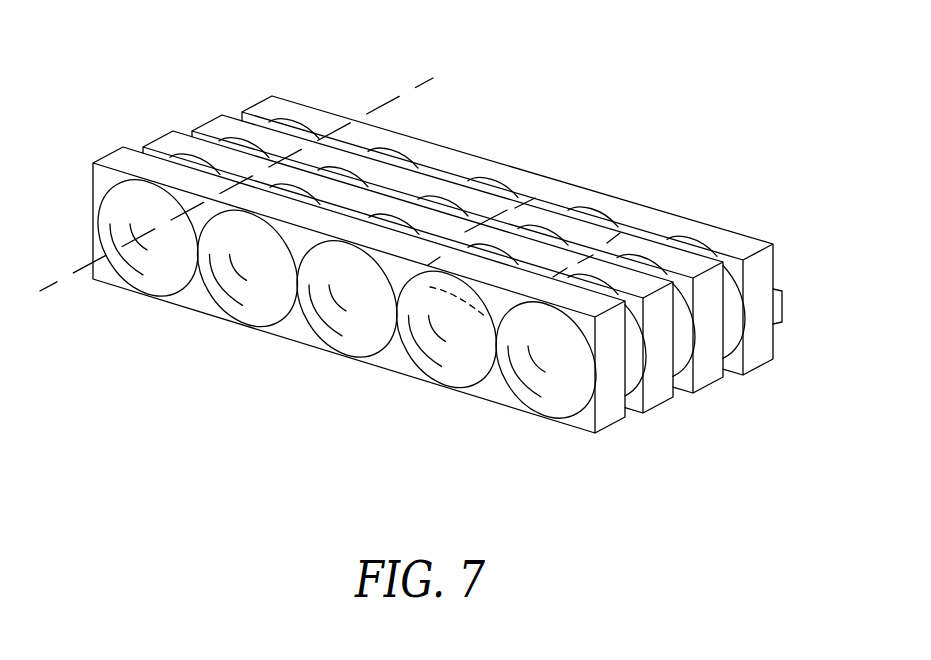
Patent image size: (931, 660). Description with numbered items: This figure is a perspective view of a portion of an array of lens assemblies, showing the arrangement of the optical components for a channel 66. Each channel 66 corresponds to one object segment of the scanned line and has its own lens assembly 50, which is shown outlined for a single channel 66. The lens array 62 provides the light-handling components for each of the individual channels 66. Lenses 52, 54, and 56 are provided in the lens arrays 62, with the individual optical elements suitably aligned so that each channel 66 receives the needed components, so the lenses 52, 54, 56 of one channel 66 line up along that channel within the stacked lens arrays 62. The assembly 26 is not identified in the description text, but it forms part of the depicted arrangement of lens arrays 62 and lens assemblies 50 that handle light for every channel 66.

The lens array assembly 26 is at (419, 264).
The lens assembly 50 is at (556, 201).
The lens 52 is at (543, 384).
The lens 54 is at (632, 377).
The lens 56 is at (685, 347).
The lens array 62 is at (200, 116).
The channel 66 is at (57, 282).